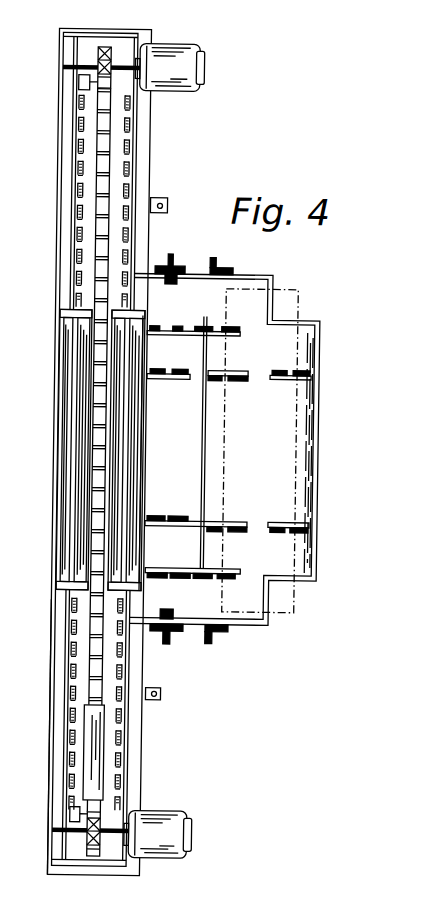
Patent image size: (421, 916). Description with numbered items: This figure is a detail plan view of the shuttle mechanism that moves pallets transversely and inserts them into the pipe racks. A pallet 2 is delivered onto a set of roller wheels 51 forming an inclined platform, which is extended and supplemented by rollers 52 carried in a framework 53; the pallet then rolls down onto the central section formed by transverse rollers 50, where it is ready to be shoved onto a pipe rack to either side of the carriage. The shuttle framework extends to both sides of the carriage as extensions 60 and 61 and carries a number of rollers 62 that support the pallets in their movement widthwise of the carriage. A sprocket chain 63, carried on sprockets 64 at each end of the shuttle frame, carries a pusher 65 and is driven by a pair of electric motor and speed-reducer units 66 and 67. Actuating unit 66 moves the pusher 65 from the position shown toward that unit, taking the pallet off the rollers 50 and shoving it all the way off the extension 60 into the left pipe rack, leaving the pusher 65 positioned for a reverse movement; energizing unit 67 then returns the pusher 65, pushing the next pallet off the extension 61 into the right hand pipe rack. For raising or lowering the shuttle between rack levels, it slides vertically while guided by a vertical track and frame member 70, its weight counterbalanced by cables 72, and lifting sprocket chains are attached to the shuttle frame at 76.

The pallet 2 is at (297, 595).
The transverse rollers 50 is at (80, 428).
The roller wheels 51 is at (187, 518).
The rollers 52 is at (298, 374).
The framework 53 is at (318, 482).
The shuttle frame extension 60 is at (56, 138).
The shuttle frame extension 61 is at (53, 727).
The rollers 62 is at (77, 168).
The sprocket chain 63 is at (97, 227).
The sprockets 64 is at (92, 50).
The pusher 65 is at (96, 745).
The electric motor and speed-reducer unit 66 is at (199, 67).
The electric motor and speed-reducer unit 67 is at (163, 817).
The vertical track and frame member 70 is at (171, 262).
The cables 72 is at (160, 197).
The attachment point 76 is at (171, 284).